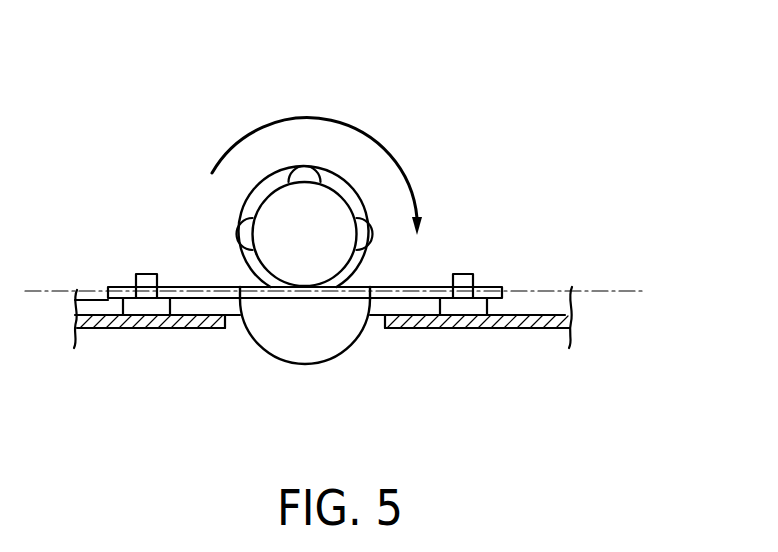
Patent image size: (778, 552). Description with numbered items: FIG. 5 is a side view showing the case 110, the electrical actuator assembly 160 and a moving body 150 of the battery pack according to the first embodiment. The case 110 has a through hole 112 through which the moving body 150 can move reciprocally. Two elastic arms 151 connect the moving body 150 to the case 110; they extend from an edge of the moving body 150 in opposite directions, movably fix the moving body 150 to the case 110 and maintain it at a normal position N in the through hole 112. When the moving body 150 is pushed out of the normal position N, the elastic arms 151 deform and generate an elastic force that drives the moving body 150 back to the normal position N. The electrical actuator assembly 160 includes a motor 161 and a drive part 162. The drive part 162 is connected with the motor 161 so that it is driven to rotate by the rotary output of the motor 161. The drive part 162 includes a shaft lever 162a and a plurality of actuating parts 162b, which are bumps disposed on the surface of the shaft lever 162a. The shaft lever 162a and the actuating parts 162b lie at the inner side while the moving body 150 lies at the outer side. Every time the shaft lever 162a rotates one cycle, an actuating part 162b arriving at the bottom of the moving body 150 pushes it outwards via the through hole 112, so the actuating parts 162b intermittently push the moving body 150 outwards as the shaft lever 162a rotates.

The case 110 is at (493, 330).
The through hole 112 is at (374, 320).
The moving body 150 is at (302, 333).
The elastic arm 151 is at (183, 286).
The electrical actuator assembly 160 is at (300, 159).
The motor 161 is at (243, 205).
The drive part 162 is at (300, 158).
The shaft lever 162a is at (287, 215).
The actuating part 162b is at (304, 165).
The normal position N is at (348, 289).